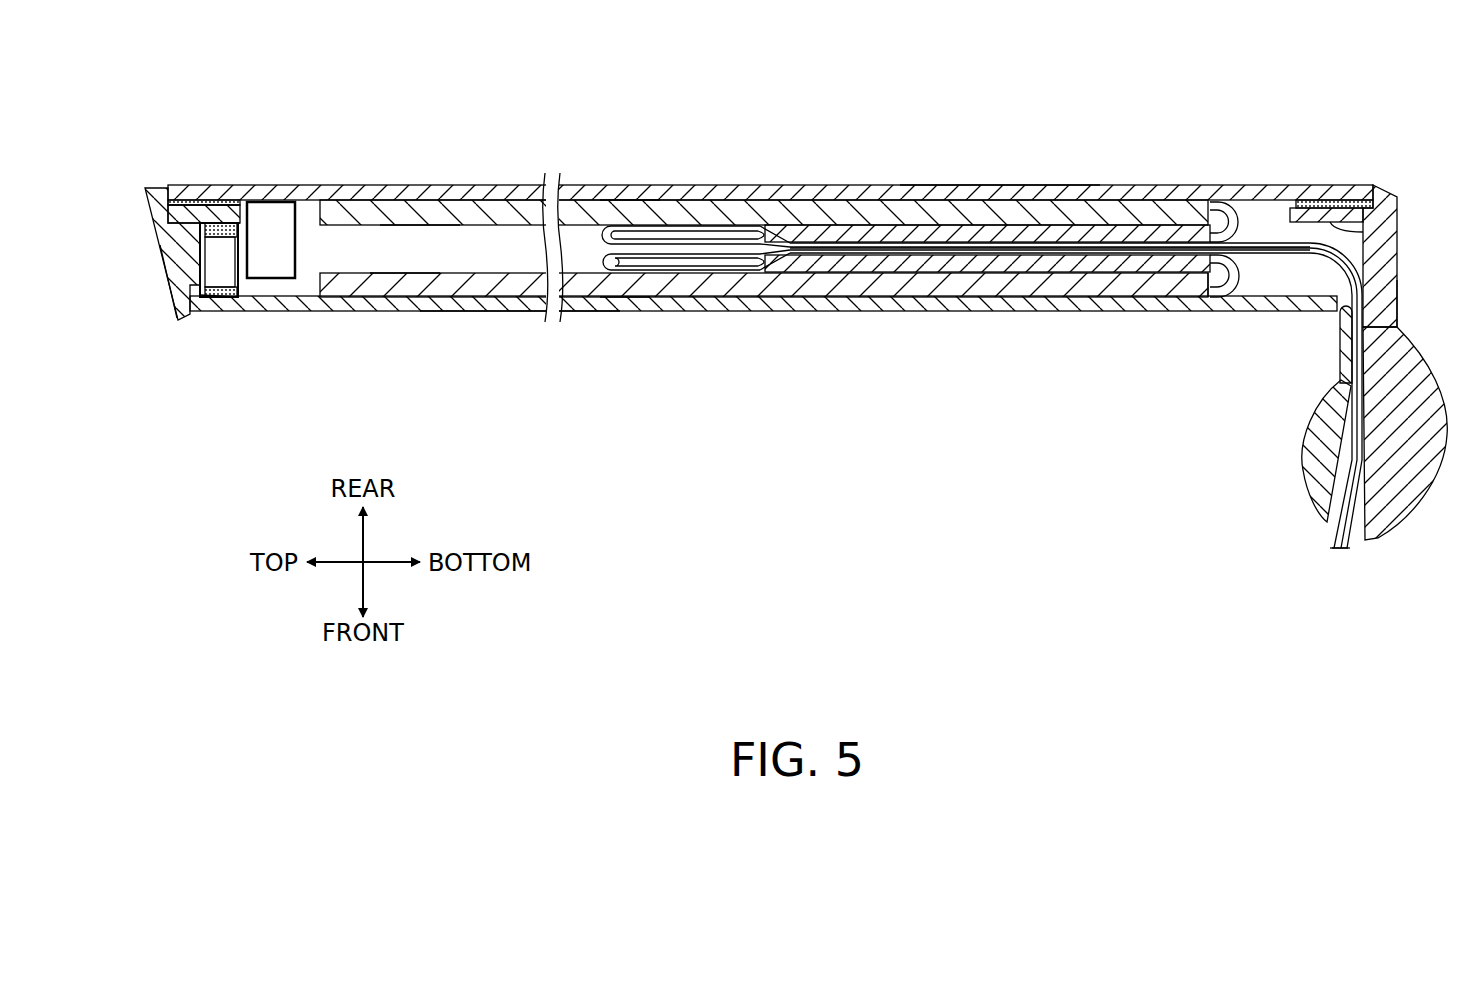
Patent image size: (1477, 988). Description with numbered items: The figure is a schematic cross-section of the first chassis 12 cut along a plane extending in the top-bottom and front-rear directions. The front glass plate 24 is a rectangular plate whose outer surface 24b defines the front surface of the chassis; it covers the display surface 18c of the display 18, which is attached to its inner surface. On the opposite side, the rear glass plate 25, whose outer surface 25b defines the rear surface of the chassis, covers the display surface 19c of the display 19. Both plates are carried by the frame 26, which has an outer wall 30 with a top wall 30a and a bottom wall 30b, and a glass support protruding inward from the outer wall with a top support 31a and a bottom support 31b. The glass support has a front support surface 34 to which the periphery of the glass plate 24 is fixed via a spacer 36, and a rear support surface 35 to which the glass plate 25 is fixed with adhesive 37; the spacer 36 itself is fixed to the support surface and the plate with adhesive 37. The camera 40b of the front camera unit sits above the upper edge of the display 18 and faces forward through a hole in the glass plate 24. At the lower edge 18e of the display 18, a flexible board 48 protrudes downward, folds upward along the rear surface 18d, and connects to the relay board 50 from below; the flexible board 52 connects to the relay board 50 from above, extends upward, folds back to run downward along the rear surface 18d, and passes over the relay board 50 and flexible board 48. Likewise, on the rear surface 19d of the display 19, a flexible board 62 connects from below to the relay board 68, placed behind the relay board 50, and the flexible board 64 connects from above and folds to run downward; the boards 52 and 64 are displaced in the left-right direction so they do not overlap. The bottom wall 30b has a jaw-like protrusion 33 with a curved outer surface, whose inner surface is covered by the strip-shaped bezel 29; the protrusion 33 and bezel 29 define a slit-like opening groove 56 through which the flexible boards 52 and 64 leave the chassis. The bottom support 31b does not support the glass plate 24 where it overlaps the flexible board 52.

The first chassis 12 is at (127, 84).
The display 18 is at (737, 287).
The display surface 18c is at (623, 298).
The rear surface 18d is at (396, 268).
The lower edge 18e is at (1217, 292).
The display 19 is at (757, 212).
The display surface 19c is at (633, 199).
The rear surface 19d is at (408, 226).
The glass plate 24 is at (803, 312).
The outer surface 24b is at (480, 312).
The glass plate 25 is at (833, 192).
The outer surface 25b is at (946, 186).
The frame 26 is at (1399, 255).
The bezel 29 is at (1303, 452).
The outer wall 30 is at (157, 248).
The top wall 30a is at (177, 277).
The bottom wall 30b is at (1398, 316).
The top support 31a is at (222, 206).
The bottom support 31b is at (1310, 216).
The protrusion 33 is at (1420, 452).
The front support surface 34 is at (205, 230).
The rear support surface 35 is at (172, 200).
The spacer 36 is at (227, 273).
The adhesive 37 is at (199, 204).
The camera 40b is at (268, 265).
The flexible board 48 is at (1083, 258).
The relay board 50 is at (923, 264).
The flexible board 52 is at (680, 262).
The opening groove 56 is at (1355, 555).
The flexible board 62 is at (1200, 204).
The flexible board 64 is at (695, 230).
The relay board 68 is at (897, 233).